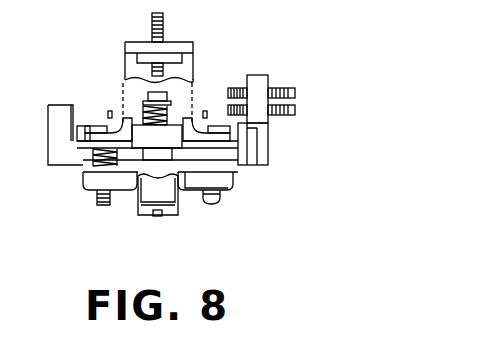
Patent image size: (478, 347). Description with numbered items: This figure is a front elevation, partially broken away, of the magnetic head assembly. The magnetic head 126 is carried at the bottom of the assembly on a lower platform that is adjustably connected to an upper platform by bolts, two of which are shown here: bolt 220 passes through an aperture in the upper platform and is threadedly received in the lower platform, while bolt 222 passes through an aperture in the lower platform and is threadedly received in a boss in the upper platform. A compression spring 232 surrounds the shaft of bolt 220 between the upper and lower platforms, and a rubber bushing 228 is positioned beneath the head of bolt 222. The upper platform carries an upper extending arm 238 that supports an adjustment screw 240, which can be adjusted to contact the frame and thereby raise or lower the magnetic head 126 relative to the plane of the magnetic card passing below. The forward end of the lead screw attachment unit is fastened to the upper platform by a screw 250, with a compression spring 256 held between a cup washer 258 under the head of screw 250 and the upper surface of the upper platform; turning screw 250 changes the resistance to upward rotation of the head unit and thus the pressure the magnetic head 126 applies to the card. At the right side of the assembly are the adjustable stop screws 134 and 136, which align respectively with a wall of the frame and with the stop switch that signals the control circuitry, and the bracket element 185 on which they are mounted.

The adjustment screw 240 is at (165, 18).
The upper extending arm 238 is at (183, 63).
The screw 250 is at (160, 97).
The cup washer 258 is at (145, 100).
The compression spring 256 is at (143, 112).
The bolt 220 is at (92, 133).
The adjustable stop screw 134 is at (295, 93).
The adjustable stop screw 136 is at (295, 113).
The mounting bracket 185 is at (250, 152).
The compression spring 232 is at (93, 160).
The magnetic head 126 is at (140, 213).
The bolt 222 is at (214, 196).
The rubber bushing 228 is at (227, 190).